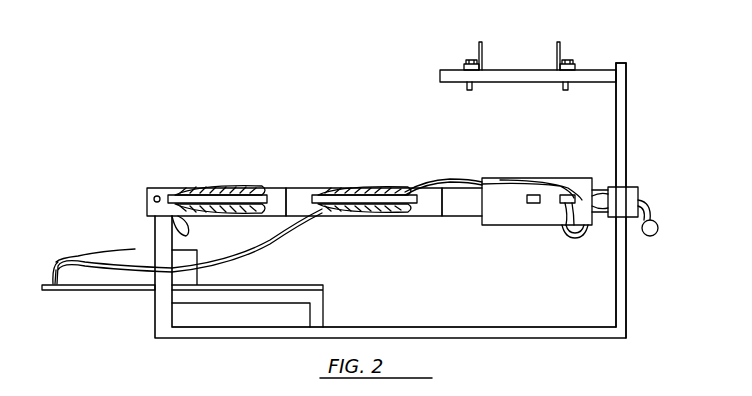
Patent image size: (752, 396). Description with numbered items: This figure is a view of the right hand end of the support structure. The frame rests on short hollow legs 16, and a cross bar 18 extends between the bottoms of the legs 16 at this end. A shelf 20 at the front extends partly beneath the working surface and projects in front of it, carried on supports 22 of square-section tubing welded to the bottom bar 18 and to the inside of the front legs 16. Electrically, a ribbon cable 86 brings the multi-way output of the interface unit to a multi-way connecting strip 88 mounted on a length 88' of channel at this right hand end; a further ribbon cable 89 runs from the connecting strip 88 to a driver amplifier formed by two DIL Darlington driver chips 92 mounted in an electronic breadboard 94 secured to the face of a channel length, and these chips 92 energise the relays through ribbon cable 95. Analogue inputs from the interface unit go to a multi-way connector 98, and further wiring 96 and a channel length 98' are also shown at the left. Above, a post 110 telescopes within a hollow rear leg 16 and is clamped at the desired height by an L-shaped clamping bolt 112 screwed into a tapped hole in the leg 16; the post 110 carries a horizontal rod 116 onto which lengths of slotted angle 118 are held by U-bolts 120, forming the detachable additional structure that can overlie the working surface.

The legs 16 is at (626, 290).
The cross bar 18 is at (467, 334).
The shelf 20 is at (50, 291).
The supports 22 is at (323, 302).
The ribbon cable 86 is at (290, 236).
The multi-way connecting strip 88 is at (364, 176).
The length of channel 88' is at (362, 179).
The ribbon cable 89 is at (445, 181).
The DIL Darlington driver chips 92 is at (540, 206).
The electronic breadboard 94 is at (488, 217).
The ribbon cable 95 is at (575, 240).
The wires 96 is at (62, 262).
The multi-way connector 98 is at (215, 177).
The sensor housing section 98' is at (257, 173).
The posts 110 is at (628, 136).
The L-shaped clamping bolts 112 is at (656, 210).
The horizontal rod 116 is at (600, 72).
The lengths of slotted angle 118 is at (553, 46).
The U-bolts 120 is at (565, 90).